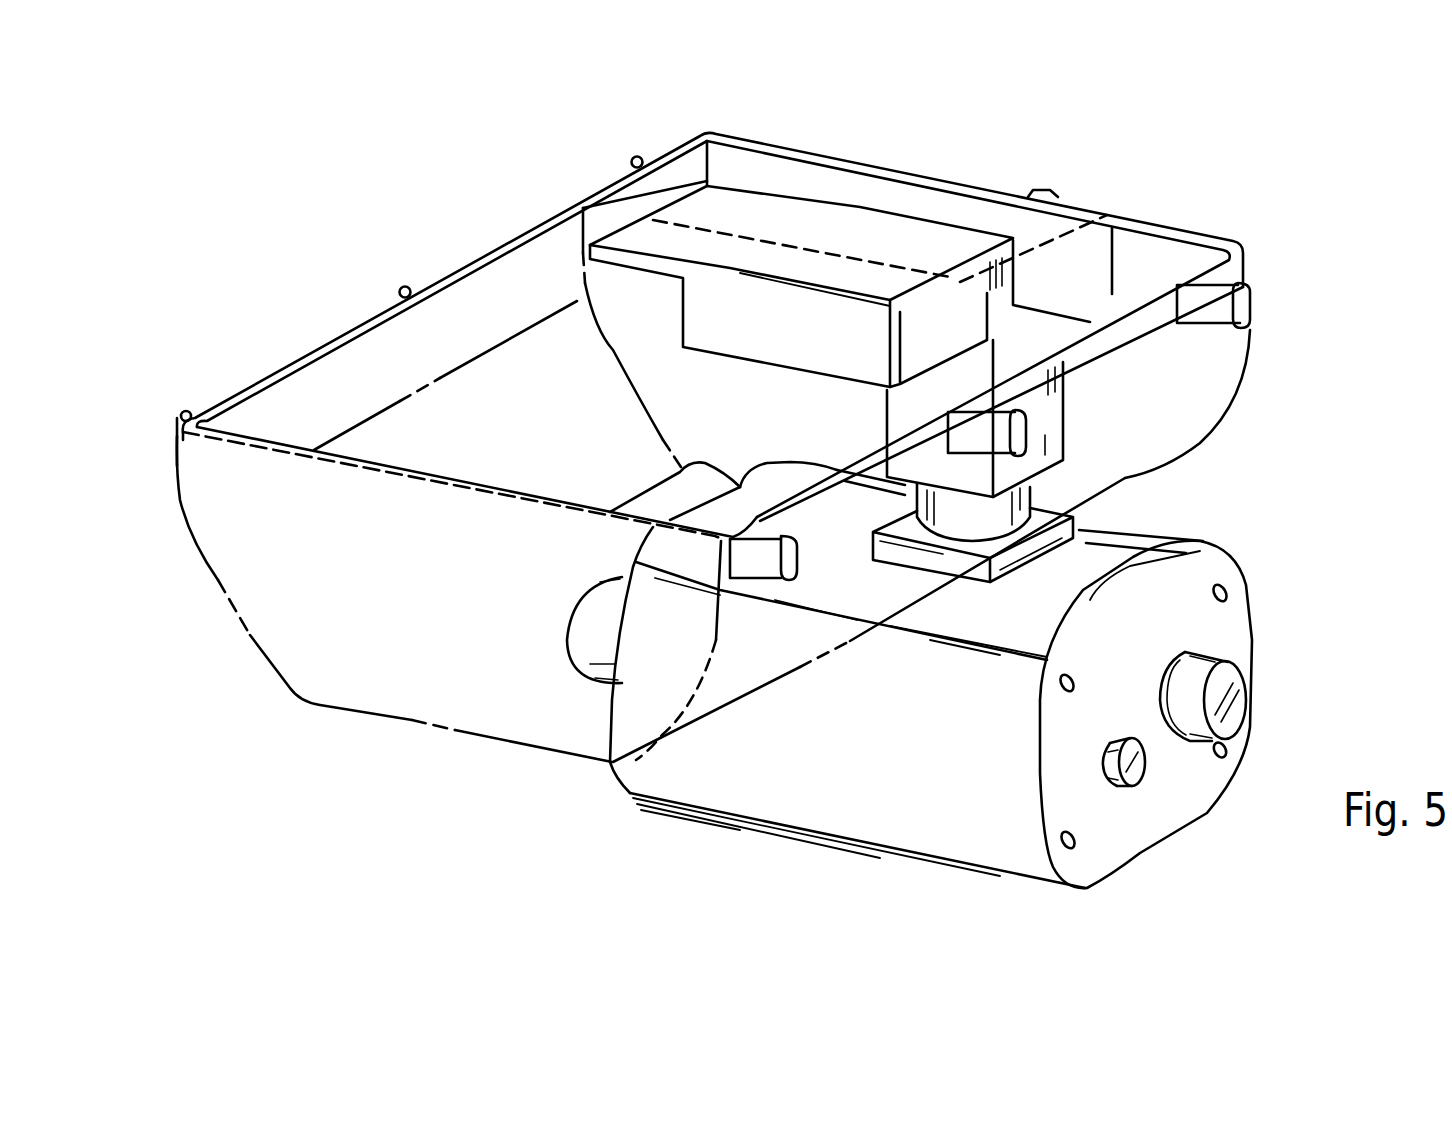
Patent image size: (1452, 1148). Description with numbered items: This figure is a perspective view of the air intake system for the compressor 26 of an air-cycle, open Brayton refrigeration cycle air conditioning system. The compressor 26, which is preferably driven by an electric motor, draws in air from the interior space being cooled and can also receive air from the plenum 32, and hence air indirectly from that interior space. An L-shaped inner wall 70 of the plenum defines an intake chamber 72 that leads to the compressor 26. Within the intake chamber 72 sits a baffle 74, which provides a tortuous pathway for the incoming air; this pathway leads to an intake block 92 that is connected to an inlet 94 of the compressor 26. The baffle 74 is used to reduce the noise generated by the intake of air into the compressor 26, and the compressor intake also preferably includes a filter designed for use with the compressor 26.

The compressor 26 is at (812, 843).
The plenum 32 is at (253, 640).
The L-shaped inner wall 70 is at (1062, 200).
The intake chamber 72 is at (1026, 245).
The baffle 74 is at (830, 203).
The intake block 92 is at (1043, 413).
The inlet 94 is at (997, 510).